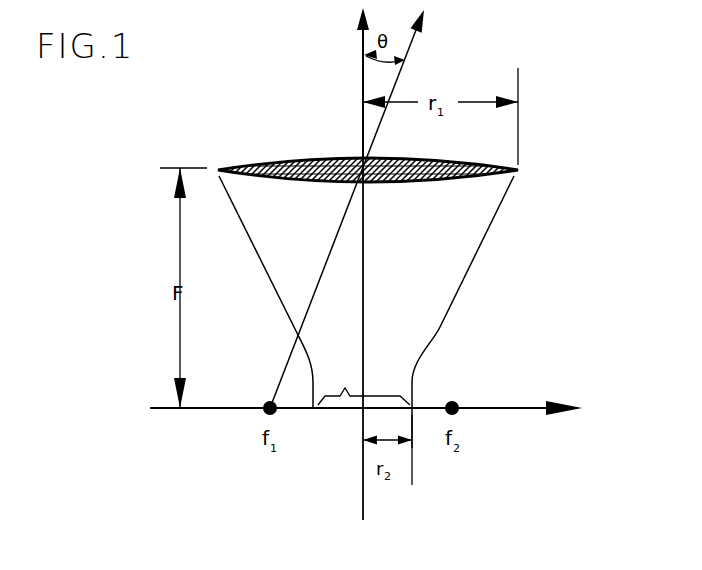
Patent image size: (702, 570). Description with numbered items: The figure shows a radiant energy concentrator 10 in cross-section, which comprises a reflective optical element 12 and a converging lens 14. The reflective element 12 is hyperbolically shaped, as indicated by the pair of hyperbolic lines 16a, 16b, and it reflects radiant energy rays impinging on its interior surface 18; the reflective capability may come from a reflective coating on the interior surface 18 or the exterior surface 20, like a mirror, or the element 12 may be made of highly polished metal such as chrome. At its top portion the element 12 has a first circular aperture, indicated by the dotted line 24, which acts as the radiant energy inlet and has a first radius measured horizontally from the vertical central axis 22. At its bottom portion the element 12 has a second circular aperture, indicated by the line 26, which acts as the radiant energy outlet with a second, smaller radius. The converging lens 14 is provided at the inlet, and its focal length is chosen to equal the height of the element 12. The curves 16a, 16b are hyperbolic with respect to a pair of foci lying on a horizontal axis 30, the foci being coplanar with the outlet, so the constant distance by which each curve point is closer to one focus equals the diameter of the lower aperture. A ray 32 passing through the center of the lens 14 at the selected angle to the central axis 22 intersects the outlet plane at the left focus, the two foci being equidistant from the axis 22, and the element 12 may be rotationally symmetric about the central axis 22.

The radiant energy concentrator 10 is at (336, 144).
The reflective optical element 12 is at (403, 312).
The converging lens 14 is at (448, 186).
The hyperbolic line 16a is at (273, 292).
The hyperbolic line 16b is at (428, 345).
The interior surface 18 is at (266, 253).
The exterior surface 20 is at (375, 312).
The vertical central axis 22 is at (363, 56).
The dotted line indicating first circular aperture 24 is at (490, 160).
The line indicating second circular aperture 26 is at (337, 411).
The horizontal axis 30 is at (521, 410).
The ray 32 is at (416, 50).